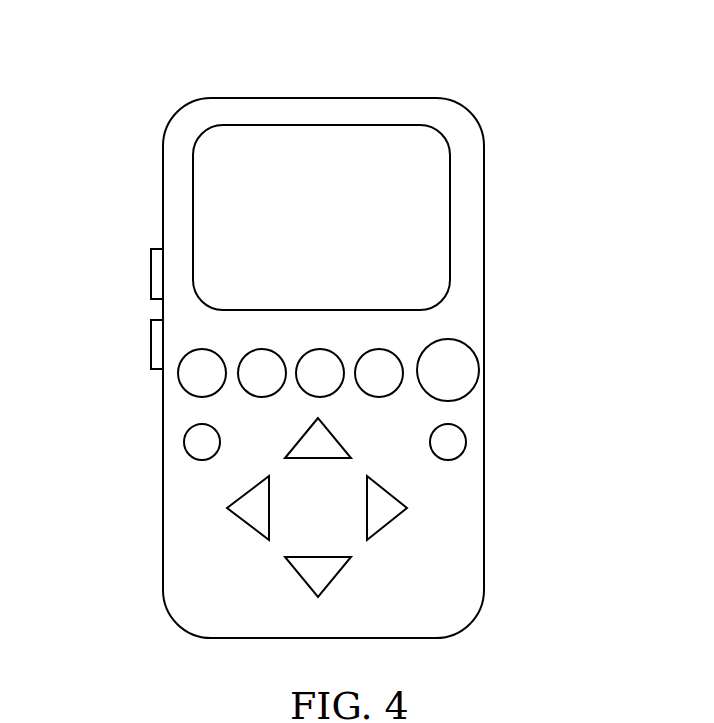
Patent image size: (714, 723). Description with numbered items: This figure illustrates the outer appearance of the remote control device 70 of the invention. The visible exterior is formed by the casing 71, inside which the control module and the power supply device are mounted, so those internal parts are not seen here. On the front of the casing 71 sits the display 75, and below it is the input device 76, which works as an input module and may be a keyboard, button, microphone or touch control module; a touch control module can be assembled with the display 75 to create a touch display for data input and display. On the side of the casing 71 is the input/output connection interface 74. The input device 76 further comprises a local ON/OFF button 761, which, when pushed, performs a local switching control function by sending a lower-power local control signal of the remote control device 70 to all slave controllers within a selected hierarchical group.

The remote control device 70 is at (508, 108).
The casing 71 is at (471, 191).
The input/output connection interface 74 is at (151, 348).
The display 75 is at (451, 245).
The input device 76 is at (403, 541).
The local ON/OFF button 761 is at (184, 444).